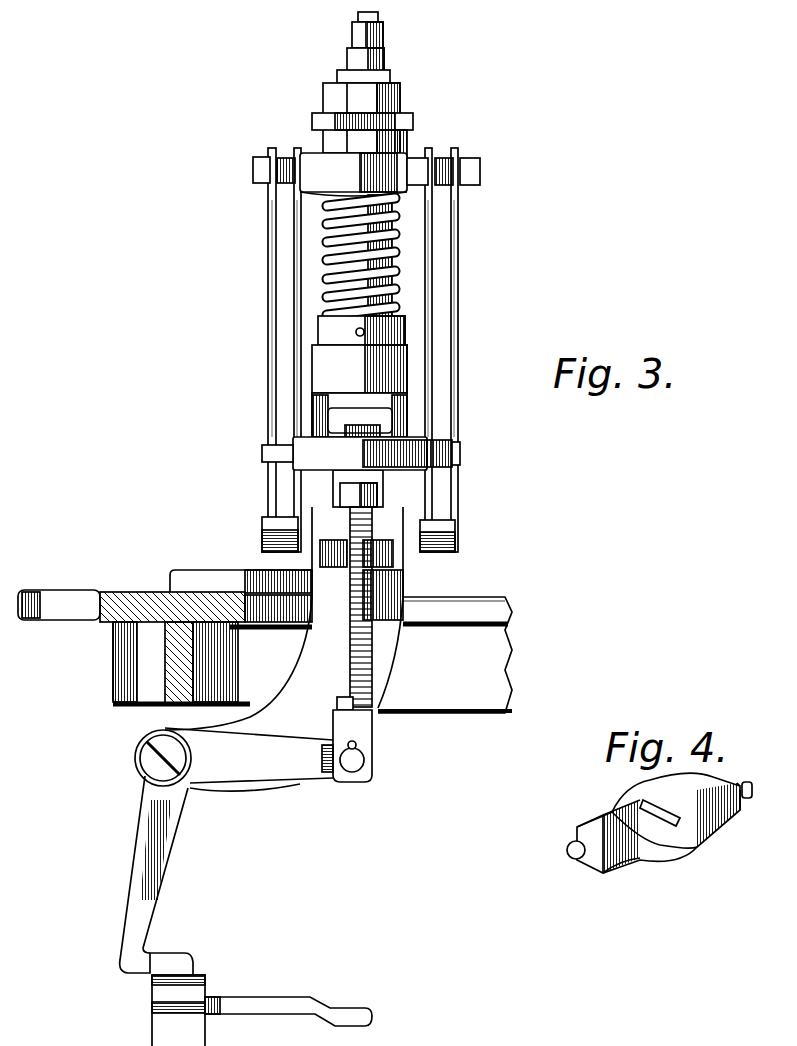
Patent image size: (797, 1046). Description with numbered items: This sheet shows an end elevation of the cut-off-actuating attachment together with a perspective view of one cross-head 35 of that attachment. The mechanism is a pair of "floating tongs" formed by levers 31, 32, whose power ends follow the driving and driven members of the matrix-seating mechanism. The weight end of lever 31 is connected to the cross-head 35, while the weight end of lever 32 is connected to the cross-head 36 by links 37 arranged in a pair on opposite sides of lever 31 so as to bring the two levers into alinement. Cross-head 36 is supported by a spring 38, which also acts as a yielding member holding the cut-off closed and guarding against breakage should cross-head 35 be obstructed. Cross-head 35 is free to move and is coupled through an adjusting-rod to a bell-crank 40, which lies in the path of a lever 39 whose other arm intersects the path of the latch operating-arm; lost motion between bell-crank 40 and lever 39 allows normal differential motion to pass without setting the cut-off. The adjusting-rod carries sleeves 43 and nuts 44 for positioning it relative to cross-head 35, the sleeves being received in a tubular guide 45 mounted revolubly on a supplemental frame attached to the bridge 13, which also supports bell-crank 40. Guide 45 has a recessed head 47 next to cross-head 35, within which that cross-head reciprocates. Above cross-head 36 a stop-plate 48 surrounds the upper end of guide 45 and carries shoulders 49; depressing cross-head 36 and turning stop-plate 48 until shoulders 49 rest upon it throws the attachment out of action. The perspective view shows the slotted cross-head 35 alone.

In FIG. 3, the bridge 13 is at (105, 596).
In FIG. 3, the lever 31 is at (437, 442).
In FIG. 3, the lever 32 is at (440, 532).
In FIG. 3, the cross-head 35 is at (410, 448).
In FIG. 4, the cross-head 35 is at (659, 823).
In FIG. 3, the cross-head 36 is at (415, 163).
In FIG. 3, the links 37 is at (268, 328).
In FIG. 3, the spring 38 is at (322, 238).
In FIG. 3, the lever 39 is at (288, 1001).
In FIG. 3, the bell-crank 40 is at (226, 851).
In FIG. 3, the sleeves 43 is at (347, 60).
In FIG. 3, the nuts 44 is at (381, 30).
In FIG. 3, the tubular guide 45 is at (388, 246).
In FIG. 3, the recessed head 47 is at (372, 400).
In FIG. 3, the stop-plate 48 is at (412, 112).
In FIG. 3, the shoulders 49 is at (407, 138).